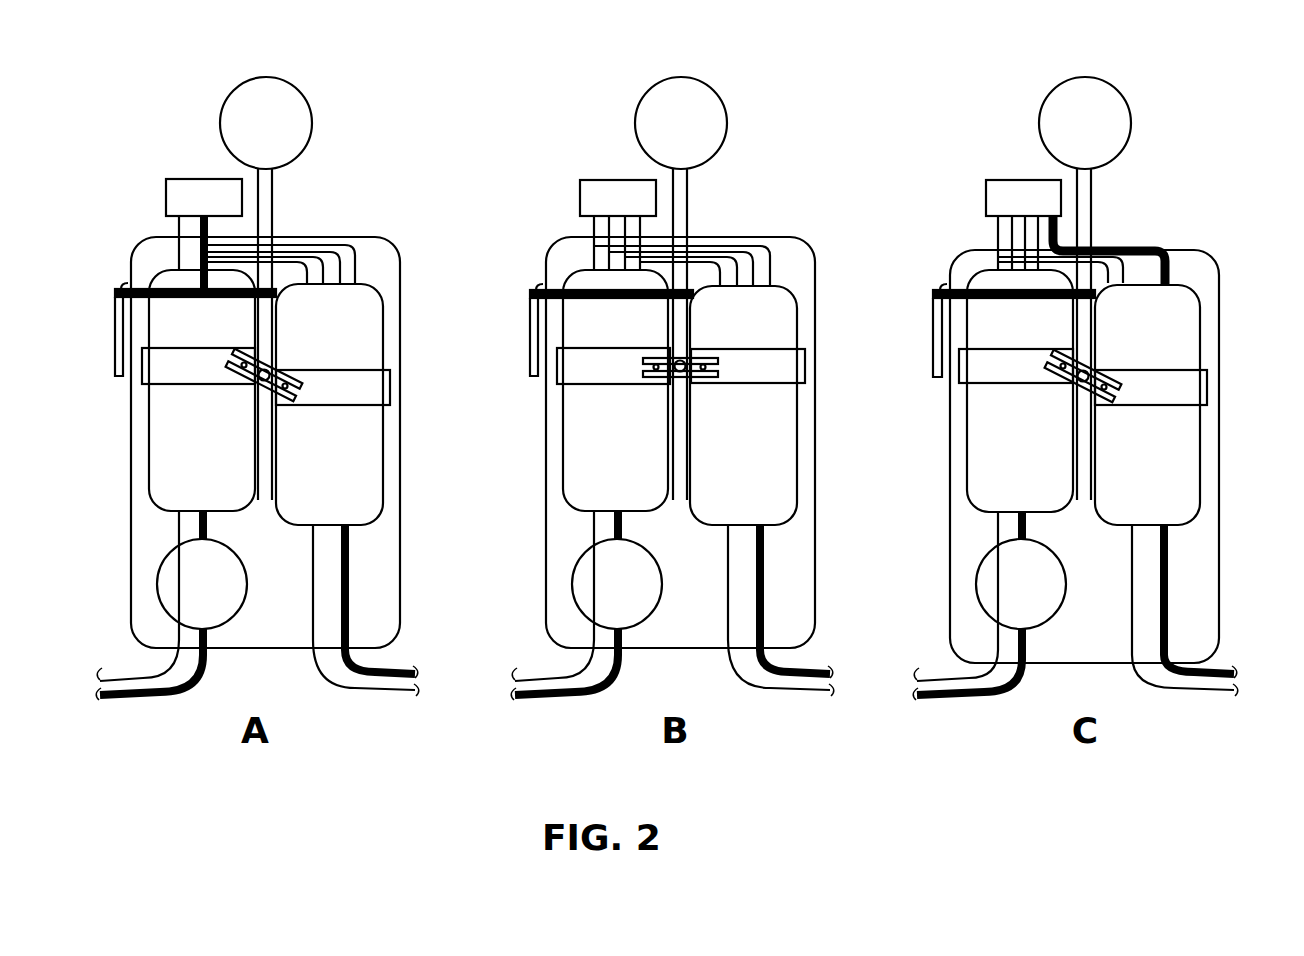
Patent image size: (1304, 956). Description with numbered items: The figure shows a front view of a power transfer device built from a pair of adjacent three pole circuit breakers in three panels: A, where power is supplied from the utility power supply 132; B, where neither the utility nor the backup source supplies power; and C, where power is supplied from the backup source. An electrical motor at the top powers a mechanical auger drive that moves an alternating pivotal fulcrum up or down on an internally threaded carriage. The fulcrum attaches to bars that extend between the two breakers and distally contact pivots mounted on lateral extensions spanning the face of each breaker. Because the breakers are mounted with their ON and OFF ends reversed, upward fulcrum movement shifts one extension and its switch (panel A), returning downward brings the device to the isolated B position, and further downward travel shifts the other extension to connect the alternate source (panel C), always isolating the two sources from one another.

The utility power supply 132 is at (200, 243).